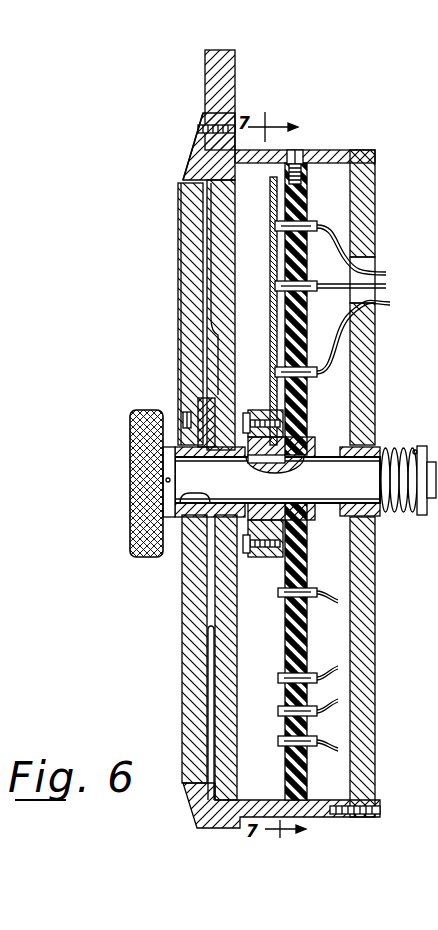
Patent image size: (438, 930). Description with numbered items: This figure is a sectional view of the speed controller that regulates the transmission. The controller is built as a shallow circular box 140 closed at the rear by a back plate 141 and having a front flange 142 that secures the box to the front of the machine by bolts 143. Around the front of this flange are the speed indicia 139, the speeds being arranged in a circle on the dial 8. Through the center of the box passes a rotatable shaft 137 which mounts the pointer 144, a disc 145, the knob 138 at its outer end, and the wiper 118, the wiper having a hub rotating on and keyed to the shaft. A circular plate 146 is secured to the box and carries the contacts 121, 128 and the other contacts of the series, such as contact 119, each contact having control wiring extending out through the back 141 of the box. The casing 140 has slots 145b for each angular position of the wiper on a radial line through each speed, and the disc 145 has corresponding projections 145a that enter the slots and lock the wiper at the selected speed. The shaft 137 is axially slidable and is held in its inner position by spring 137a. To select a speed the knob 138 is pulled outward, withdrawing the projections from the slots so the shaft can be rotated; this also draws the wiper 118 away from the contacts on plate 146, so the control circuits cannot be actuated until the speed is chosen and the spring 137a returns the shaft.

The dial 8 is at (150, 593).
The wiper 118 is at (273, 255).
The terminal 119 is at (313, 383).
The contact 121 is at (307, 229).
The contact 128 is at (307, 286).
The shaft 137 is at (330, 482).
The spring 137a is at (388, 450).
The knob 138 is at (130, 436).
The speed indicia 139 is at (194, 140).
The shallow circular box 140 is at (222, 683).
The back plate 141 is at (362, 612).
The front flange 142 is at (200, 163).
The bolts 143 is at (220, 124).
The pointer 144 is at (181, 221).
The disc 145 is at (187, 333).
The projections 145a is at (197, 407).
The slots 145b is at (211, 352).
The circular plate 146 is at (288, 653).